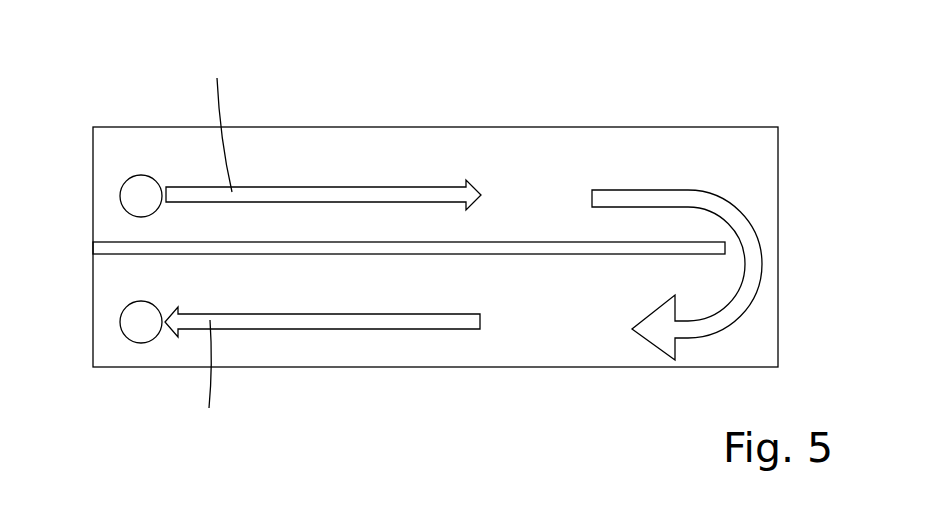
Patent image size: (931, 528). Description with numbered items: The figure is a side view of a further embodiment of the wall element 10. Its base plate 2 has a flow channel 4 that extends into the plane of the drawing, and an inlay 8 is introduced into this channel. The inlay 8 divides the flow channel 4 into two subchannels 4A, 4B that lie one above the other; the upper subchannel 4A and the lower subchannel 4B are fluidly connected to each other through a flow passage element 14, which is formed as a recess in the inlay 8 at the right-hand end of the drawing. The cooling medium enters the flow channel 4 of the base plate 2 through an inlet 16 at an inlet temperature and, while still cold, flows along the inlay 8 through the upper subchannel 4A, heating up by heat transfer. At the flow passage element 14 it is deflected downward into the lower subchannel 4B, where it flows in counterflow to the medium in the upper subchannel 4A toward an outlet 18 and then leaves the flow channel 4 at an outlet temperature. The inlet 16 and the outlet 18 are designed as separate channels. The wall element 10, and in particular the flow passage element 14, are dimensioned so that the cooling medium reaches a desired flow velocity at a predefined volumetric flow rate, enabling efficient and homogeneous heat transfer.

The base plate 2 is at (778, 152).
The flow channel 4 is at (490, 252).
The first subchannel 4A is at (384, 134).
The second subchannel 4B is at (343, 376).
The inlay 8 is at (362, 148).
The wall element 10 is at (110, 78).
The flow passage element 14 is at (766, 242).
The inlet 16 is at (137, 196).
The outlet 18 is at (137, 321).